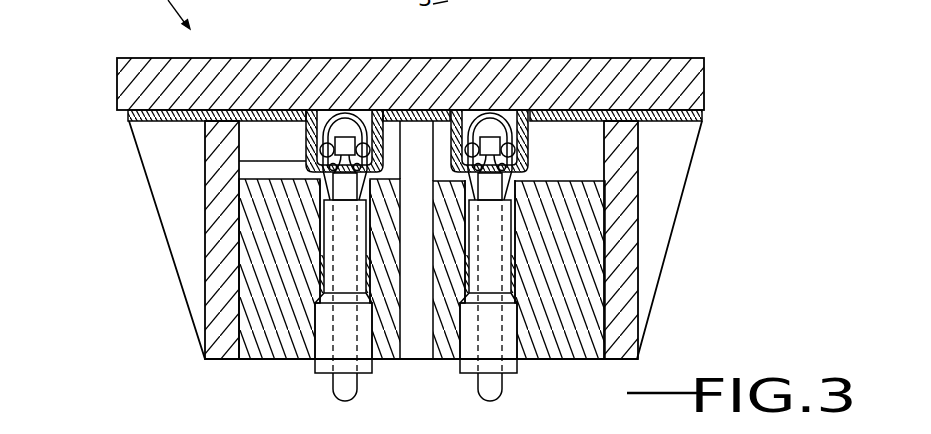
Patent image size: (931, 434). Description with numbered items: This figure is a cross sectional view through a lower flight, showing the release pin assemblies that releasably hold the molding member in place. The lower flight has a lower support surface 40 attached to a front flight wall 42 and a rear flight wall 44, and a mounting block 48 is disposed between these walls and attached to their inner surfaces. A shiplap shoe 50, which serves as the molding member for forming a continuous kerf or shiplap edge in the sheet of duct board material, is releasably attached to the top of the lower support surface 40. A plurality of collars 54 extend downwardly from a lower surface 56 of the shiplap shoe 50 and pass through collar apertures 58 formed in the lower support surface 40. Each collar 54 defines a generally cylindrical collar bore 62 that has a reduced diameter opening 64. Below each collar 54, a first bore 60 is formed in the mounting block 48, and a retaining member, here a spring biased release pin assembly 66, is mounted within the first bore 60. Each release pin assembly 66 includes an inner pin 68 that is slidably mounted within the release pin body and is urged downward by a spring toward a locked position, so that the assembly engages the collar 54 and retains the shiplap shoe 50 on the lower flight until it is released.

The lower support surface 40 is at (387, 226).
The front flight wall 42 is at (637, 278).
The rear flight wall 44 is at (205, 312).
The mounting block 48 is at (563, 335).
The shiplap shoe 50 is at (635, 58).
The collar 54 is at (298, 146).
The lower surface 56 is at (663, 123).
The collar aperture 58 is at (487, 113).
The first bore 60 is at (502, 251).
The collar bore 62 is at (508, 112).
The reduced diameter opening 64 is at (240, 162).
The release pin assembly 66 is at (465, 373).
The inner pin 68 is at (332, 392).